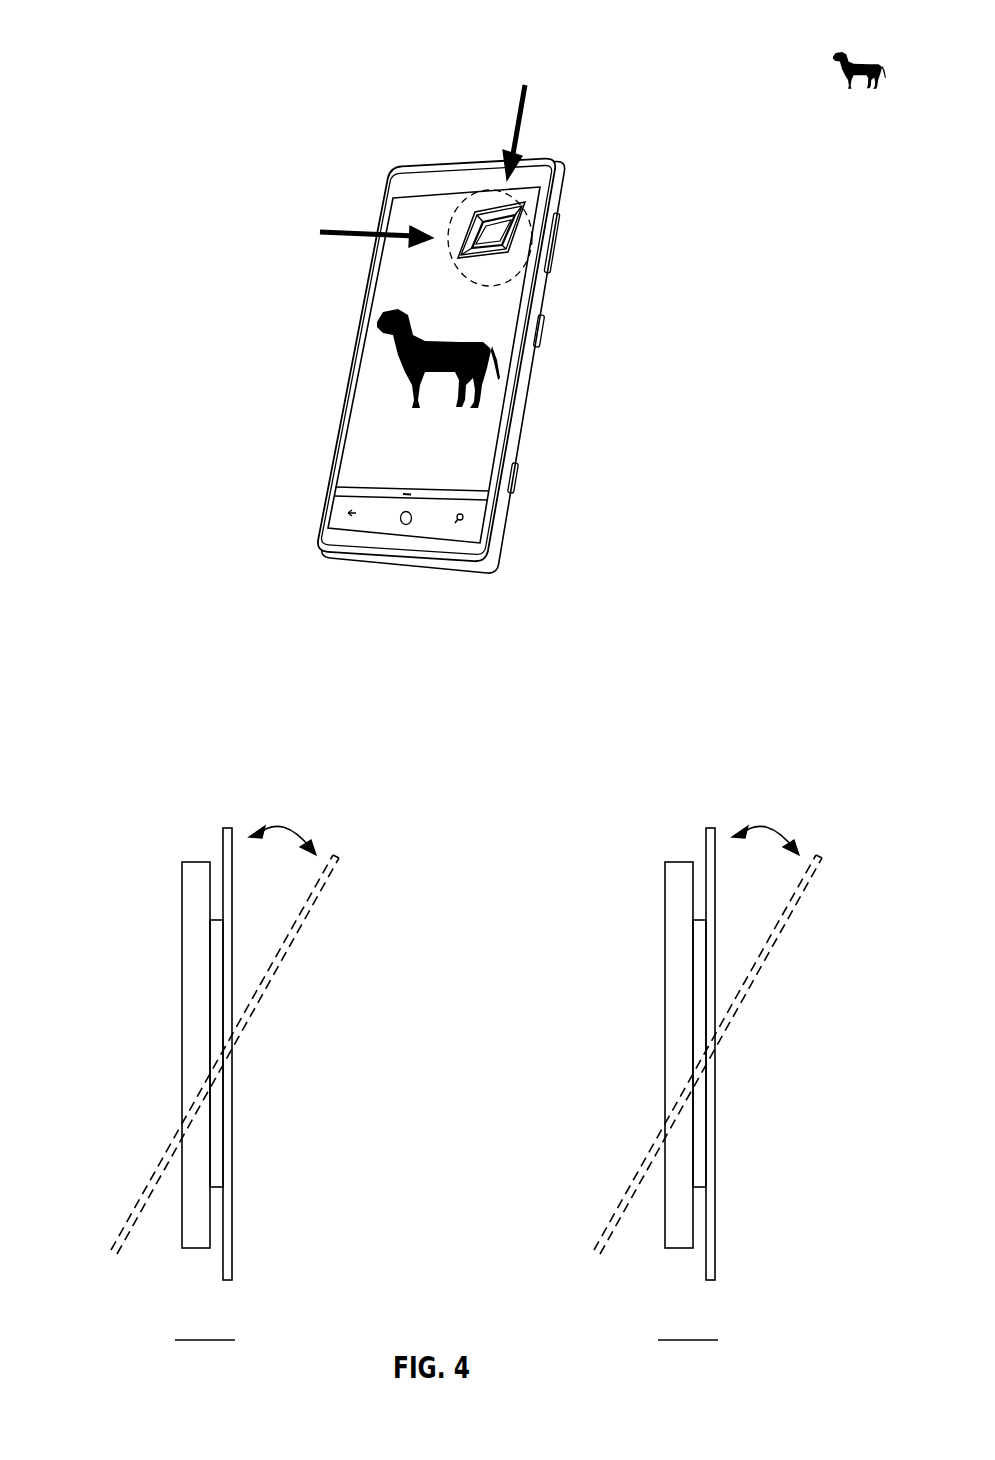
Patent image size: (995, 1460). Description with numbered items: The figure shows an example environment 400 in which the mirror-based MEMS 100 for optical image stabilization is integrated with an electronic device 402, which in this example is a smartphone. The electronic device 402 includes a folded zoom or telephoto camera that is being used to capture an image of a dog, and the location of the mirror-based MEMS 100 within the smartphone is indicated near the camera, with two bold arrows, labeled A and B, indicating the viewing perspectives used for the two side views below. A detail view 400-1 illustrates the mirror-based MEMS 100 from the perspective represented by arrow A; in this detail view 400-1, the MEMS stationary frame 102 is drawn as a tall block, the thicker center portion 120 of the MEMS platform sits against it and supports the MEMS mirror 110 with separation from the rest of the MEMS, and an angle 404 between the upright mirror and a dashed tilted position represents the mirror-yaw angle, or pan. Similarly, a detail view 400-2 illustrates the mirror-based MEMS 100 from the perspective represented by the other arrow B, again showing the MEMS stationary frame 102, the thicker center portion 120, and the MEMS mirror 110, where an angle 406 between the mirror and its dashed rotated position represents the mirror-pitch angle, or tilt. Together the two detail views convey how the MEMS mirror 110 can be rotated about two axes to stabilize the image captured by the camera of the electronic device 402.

The environment 400 is at (128, 44).
The mirror-based MEMS 100 is at (525, 197).
The MEMS stationary frame 102 is at (190, 903).
The MEMS mirror 110 is at (230, 1148).
The thicker center portion 120 is at (220, 1017).
The electronic device 402 is at (390, 543).
The angle 404 is at (283, 827).
The angle 406 is at (767, 827).
The detail view 400-1 is at (365, 1031).
The detail view 400-2 is at (724, 1031).